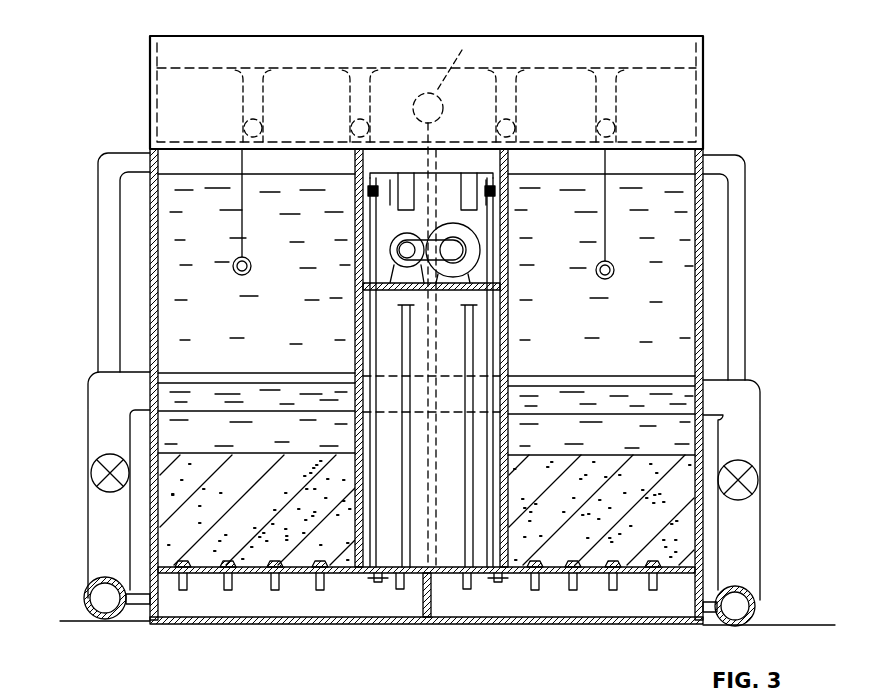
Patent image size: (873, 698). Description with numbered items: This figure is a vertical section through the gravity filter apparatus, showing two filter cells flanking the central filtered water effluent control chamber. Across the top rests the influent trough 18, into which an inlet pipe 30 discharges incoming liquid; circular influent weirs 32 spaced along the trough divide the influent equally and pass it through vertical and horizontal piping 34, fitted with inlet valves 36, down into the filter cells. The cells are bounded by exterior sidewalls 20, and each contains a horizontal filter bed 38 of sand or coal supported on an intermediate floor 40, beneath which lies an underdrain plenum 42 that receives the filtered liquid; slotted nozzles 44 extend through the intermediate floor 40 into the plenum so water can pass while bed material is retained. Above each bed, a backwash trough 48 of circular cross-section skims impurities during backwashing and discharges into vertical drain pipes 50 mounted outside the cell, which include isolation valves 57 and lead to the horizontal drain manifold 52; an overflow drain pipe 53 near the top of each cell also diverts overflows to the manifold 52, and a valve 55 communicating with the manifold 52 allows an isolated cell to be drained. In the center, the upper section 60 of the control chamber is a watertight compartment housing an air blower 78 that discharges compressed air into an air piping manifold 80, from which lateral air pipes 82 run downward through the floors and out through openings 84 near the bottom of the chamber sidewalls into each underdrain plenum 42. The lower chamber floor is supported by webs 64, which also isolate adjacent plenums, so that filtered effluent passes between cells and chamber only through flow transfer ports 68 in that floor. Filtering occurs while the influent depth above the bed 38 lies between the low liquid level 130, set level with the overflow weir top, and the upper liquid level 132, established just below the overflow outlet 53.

The influent trough 18 is at (644, 48).
The exterior sidewalls 20 is at (703, 257).
The inlet pipe 30 is at (458, 44).
The circular influent weirs 32 is at (285, 68).
The vertical and horizontal piping 34 is at (240, 260).
The inlet valves 36 is at (243, 126).
The filter bed 38 is at (258, 466).
The intermediate floor 40 is at (522, 562).
The underdrain plenum 42 is at (246, 613).
The slotted nozzles 44 is at (610, 563).
The backwash troughs 48 is at (308, 392).
The vertical drain pipes 50 is at (94, 382).
The horizontal drain manifold 52 is at (756, 611).
The overflow drain pipe 53 is at (737, 312).
The valve 55 is at (110, 578).
The isolation valves 57 is at (96, 468).
The upper section 60 is at (457, 165).
The webs 64 is at (432, 597).
The flow transfer ports 68 is at (384, 576).
The air blower 78 is at (462, 250).
The air piping manifold 80 is at (418, 168).
The lateral air pipes 82 is at (372, 240).
The openings 84 is at (500, 586).
The low liquid level 130 is at (248, 382).
The upper liquid level 132 is at (185, 172).